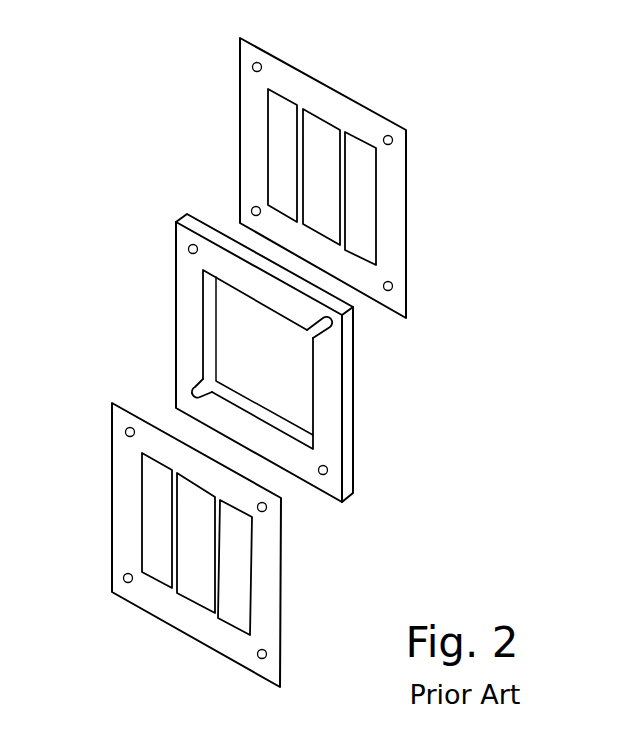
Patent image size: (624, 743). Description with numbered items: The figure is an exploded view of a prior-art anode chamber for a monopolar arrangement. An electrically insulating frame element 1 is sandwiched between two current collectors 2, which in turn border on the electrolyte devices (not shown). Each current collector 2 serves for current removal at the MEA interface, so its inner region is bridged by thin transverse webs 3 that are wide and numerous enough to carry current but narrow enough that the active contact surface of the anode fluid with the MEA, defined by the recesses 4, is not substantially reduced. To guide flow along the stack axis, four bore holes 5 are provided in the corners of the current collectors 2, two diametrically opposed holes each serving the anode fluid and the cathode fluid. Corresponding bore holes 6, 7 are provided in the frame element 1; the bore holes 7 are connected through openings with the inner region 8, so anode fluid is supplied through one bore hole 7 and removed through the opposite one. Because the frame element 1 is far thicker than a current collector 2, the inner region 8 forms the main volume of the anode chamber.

The frame element 1 is at (149, 311).
The current collector 2 is at (212, 130).
The transverse webs 3 is at (303, 362).
The recesses 4 is at (276, 145).
The bore holes 5 is at (253, 67).
The bore holes 6 is at (188, 250).
The bore holes 7 is at (192, 392).
The inner region 8 is at (258, 365).